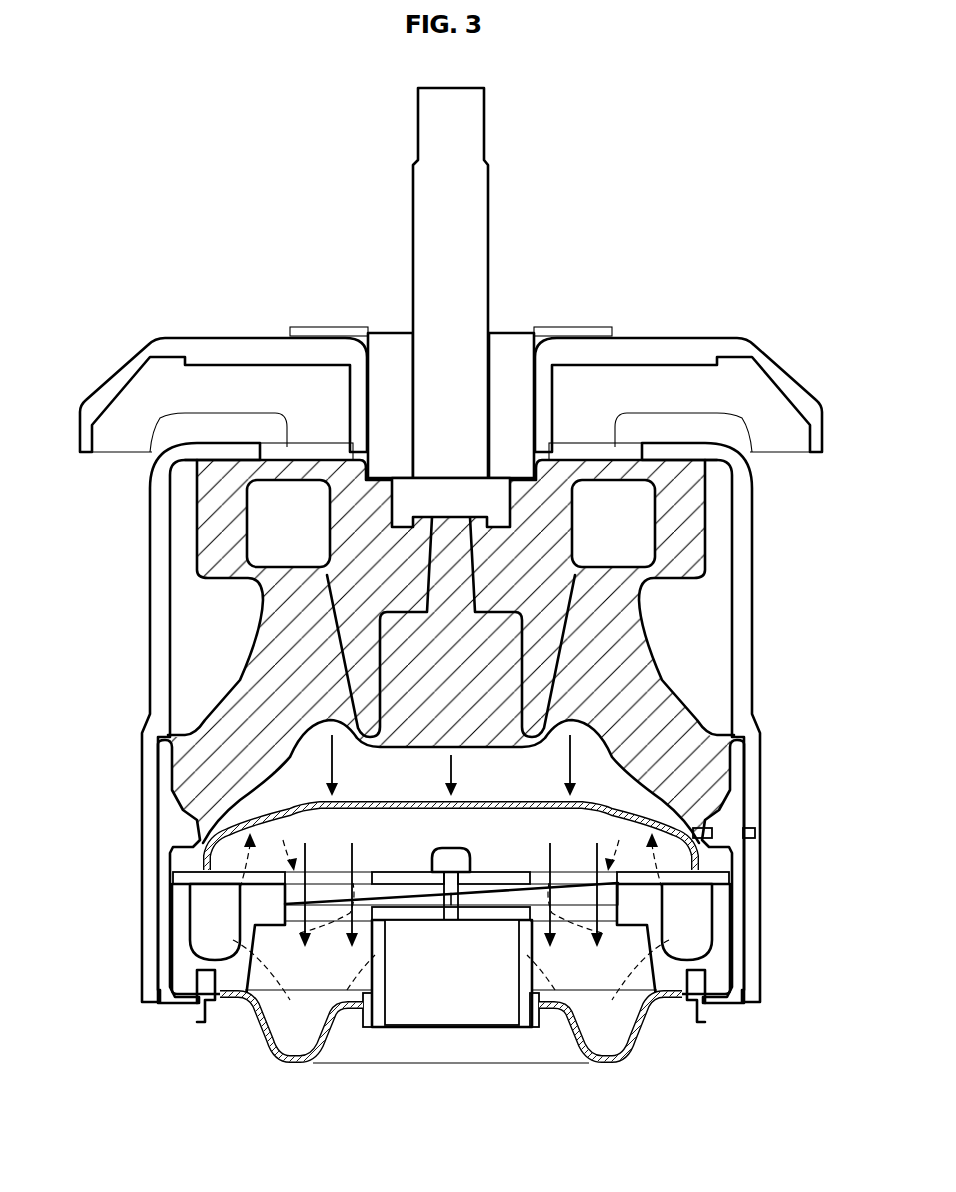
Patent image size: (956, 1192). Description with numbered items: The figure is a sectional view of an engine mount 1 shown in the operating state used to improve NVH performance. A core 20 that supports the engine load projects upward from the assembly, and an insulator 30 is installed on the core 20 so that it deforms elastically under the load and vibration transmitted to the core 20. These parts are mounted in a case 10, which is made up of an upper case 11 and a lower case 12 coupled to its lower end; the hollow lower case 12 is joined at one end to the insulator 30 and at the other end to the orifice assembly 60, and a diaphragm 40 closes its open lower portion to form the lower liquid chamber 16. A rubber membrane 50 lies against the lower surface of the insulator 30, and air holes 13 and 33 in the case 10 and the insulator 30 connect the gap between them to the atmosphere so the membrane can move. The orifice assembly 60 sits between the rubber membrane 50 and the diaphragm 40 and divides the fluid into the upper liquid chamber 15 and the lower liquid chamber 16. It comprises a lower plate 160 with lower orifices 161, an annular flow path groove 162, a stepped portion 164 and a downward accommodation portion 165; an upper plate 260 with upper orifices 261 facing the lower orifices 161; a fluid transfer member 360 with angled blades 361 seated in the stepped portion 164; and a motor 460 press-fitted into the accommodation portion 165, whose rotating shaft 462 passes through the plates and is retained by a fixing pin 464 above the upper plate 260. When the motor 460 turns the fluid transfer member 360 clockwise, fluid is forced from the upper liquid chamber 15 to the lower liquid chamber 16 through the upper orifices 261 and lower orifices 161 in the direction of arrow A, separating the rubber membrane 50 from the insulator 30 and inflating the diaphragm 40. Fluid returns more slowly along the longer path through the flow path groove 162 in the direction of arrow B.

The engine mount 1 is at (577, 111).
The case 10 is at (78, 750).
The upper case 11 is at (150, 750).
The lower case 12 is at (160, 795).
The air hole 13 is at (755, 835).
The upper liquid chamber 15 is at (442, 843).
The lower liquid chamber 16 is at (548, 990).
The core 20 is at (515, 353).
The insulator 30 is at (683, 508).
The air hole 33 is at (712, 830).
The diaphragm 40 is at (611, 1066).
The rubber membrane 50 is at (524, 806).
The orifice assembly 60 is at (254, 881).
The lower plate 160 is at (183, 947).
The lower orifice 161 is at (350, 1000).
The flow path groove 162 is at (203, 903).
The stepped portion 164 is at (672, 875).
The accommodation portion 165 is at (348, 990).
The upper plate 260 is at (173, 876).
The upper orifice 261 is at (573, 880).
The fluid transfer member 360 is at (478, 893).
The blade 361 is at (330, 885).
The motor 460 is at (419, 1017).
The rotating shaft 462 is at (450, 912).
The fixing pin 464 is at (433, 855).
The arrow A is at (352, 875).
The arrow B is at (197, 988).